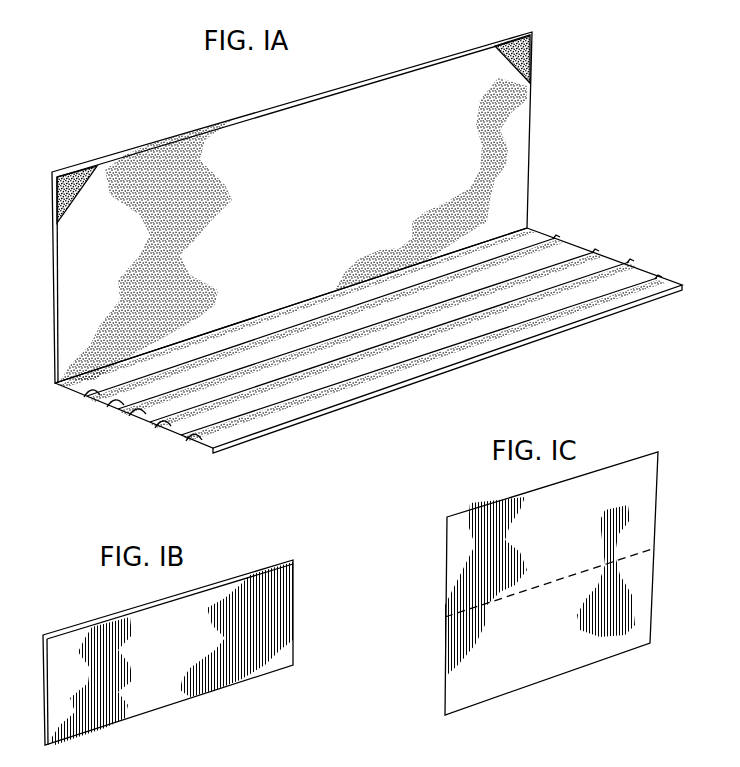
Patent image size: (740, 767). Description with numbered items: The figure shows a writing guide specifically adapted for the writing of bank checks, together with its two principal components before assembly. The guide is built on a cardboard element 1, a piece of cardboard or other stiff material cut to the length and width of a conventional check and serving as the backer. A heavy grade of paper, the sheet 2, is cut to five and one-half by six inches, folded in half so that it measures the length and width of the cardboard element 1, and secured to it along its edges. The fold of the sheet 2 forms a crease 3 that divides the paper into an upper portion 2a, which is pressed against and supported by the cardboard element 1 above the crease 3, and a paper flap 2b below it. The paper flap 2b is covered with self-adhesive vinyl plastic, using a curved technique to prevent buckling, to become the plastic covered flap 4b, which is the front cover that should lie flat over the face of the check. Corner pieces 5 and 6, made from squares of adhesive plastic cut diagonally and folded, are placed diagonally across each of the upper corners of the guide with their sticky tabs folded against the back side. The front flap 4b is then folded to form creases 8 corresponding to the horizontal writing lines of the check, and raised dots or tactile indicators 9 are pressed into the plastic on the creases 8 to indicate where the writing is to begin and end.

In FIG. 1A, the cardboard element 1 is at (516, 132).
In FIG. 1B, the cardboard element 1 is at (155, 690).
In FIG. 1C, the sheet 2 is at (678, 512).
In FIG. 1C, the upper portion 2a is at (457, 548).
In FIG. 1C, the paper flap 2b is at (540, 658).
In FIG. 1A, the crease 3 is at (515, 224).
In FIG. 1C, the crease 3 is at (634, 556).
In FIG. 1A, the plastic covered flap 4b is at (448, 357).
In FIG. 1A, the corner piece 5 is at (74, 176).
In FIG. 1A, the corner piece 6 is at (525, 56).
In FIG. 1A, the creases 8 is at (129, 415).
In FIG. 1A, the tactile indicators 9 is at (632, 284).